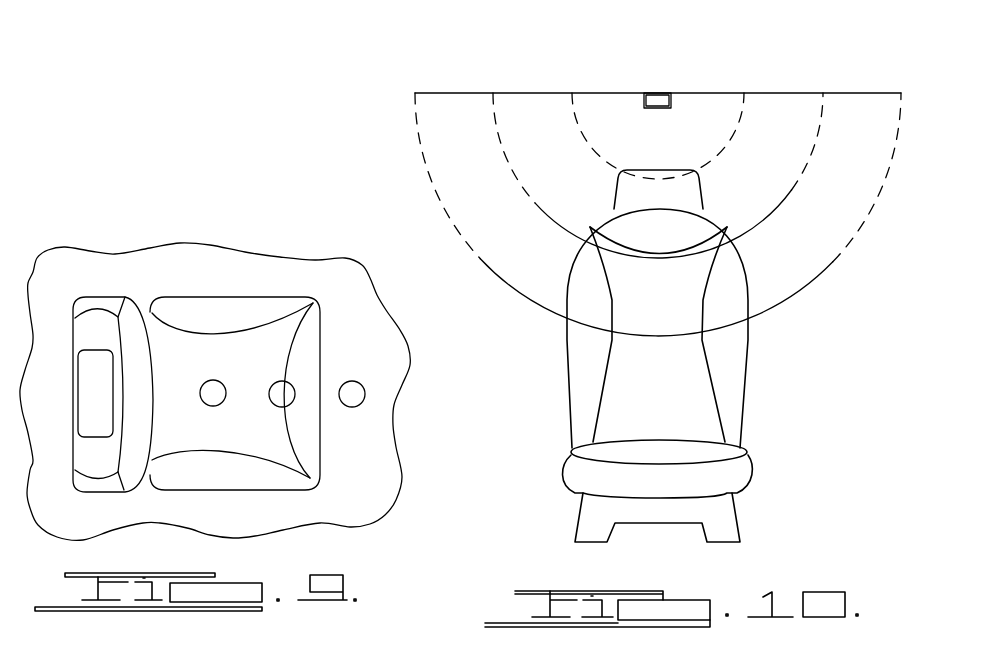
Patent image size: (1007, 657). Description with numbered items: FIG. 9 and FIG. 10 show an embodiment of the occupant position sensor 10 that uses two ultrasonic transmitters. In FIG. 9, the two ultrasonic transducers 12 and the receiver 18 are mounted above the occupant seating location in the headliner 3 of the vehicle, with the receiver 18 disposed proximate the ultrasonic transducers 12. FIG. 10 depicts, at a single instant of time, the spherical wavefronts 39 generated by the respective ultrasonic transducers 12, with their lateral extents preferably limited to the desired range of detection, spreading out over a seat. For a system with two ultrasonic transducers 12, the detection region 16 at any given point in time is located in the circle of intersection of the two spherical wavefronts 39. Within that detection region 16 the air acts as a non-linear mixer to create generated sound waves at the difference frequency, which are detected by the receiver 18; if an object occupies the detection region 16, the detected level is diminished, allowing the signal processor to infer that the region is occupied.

In FIG. 9, the occupant position sensor 10 is at (87, 230).
In FIG. 10, the occupant position sensor 10 is at (771, 54).
In FIG. 9, the headliner 3 is at (298, 258).
In FIG. 9, the ultrasonic transducer 12 is at (210, 384).
In FIG. 10, the ultrasonic transducer 12 is at (651, 92).
In FIG. 9, the receiver 18 is at (278, 396).
In FIG. 10, the receiver 18 is at (660, 91).
In FIG. 10, the detection region 16 is at (745, 100).
In FIG. 10, the spherical wavefronts 39 is at (785, 198).